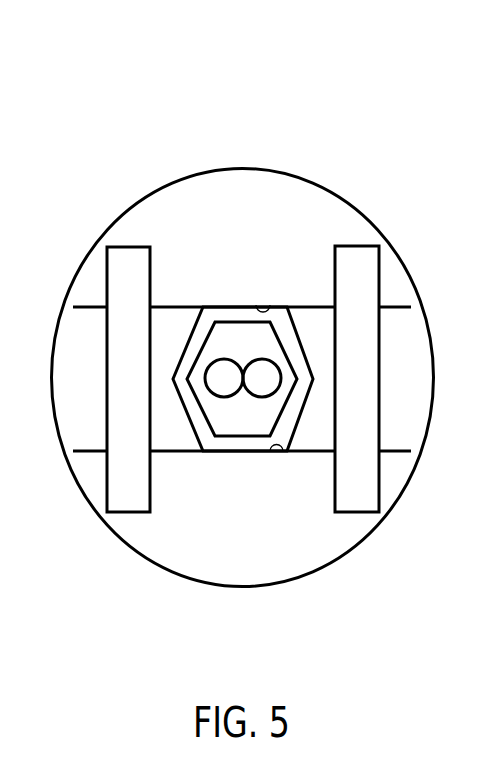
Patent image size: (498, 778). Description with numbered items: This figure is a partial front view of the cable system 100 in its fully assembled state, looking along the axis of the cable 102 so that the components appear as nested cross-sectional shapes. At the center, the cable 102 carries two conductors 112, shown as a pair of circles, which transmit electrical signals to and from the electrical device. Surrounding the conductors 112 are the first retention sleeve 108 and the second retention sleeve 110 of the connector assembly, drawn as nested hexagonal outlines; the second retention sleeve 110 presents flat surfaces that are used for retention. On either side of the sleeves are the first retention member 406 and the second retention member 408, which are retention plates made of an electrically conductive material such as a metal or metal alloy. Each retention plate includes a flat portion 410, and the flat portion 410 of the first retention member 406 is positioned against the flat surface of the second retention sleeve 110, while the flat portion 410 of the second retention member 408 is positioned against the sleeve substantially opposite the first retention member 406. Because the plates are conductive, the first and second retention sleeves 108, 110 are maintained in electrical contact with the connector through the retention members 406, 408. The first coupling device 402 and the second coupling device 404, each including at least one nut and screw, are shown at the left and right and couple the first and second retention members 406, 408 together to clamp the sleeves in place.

The cable system 100 is at (120, 85).
The cable 102 is at (320, 183).
The first retention sleeve 108 is at (285, 343).
The second retention sleeve 110 is at (188, 337).
The conductor 112 is at (225, 397).
The first coupling device 402 is at (117, 247).
The second coupling device 404 is at (362, 246).
The first retention member 406 is at (187, 307).
The second retention member 408 is at (177, 452).
The flat portion 410 is at (270, 305).